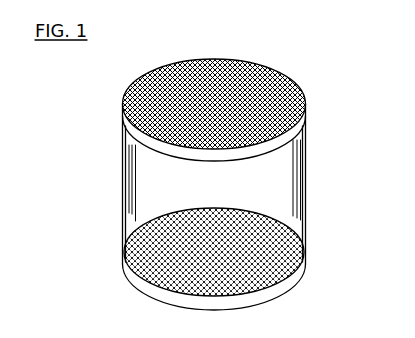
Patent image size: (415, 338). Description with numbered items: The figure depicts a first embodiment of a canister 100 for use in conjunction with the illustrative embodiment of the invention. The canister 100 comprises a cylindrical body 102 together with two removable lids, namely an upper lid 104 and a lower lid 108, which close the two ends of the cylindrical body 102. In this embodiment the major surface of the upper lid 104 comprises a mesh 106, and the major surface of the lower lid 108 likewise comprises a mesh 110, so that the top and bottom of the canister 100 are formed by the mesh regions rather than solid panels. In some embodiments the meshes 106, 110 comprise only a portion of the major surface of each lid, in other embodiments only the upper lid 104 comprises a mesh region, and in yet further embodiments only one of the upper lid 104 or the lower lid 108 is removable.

The canister 100 is at (98, 163).
The cylindrical body 102 is at (306, 182).
The upper lid 104 is at (305, 125).
The mesh 106 is at (280, 67).
The lower lid 108 is at (136, 283).
The mesh 110 is at (305, 246).